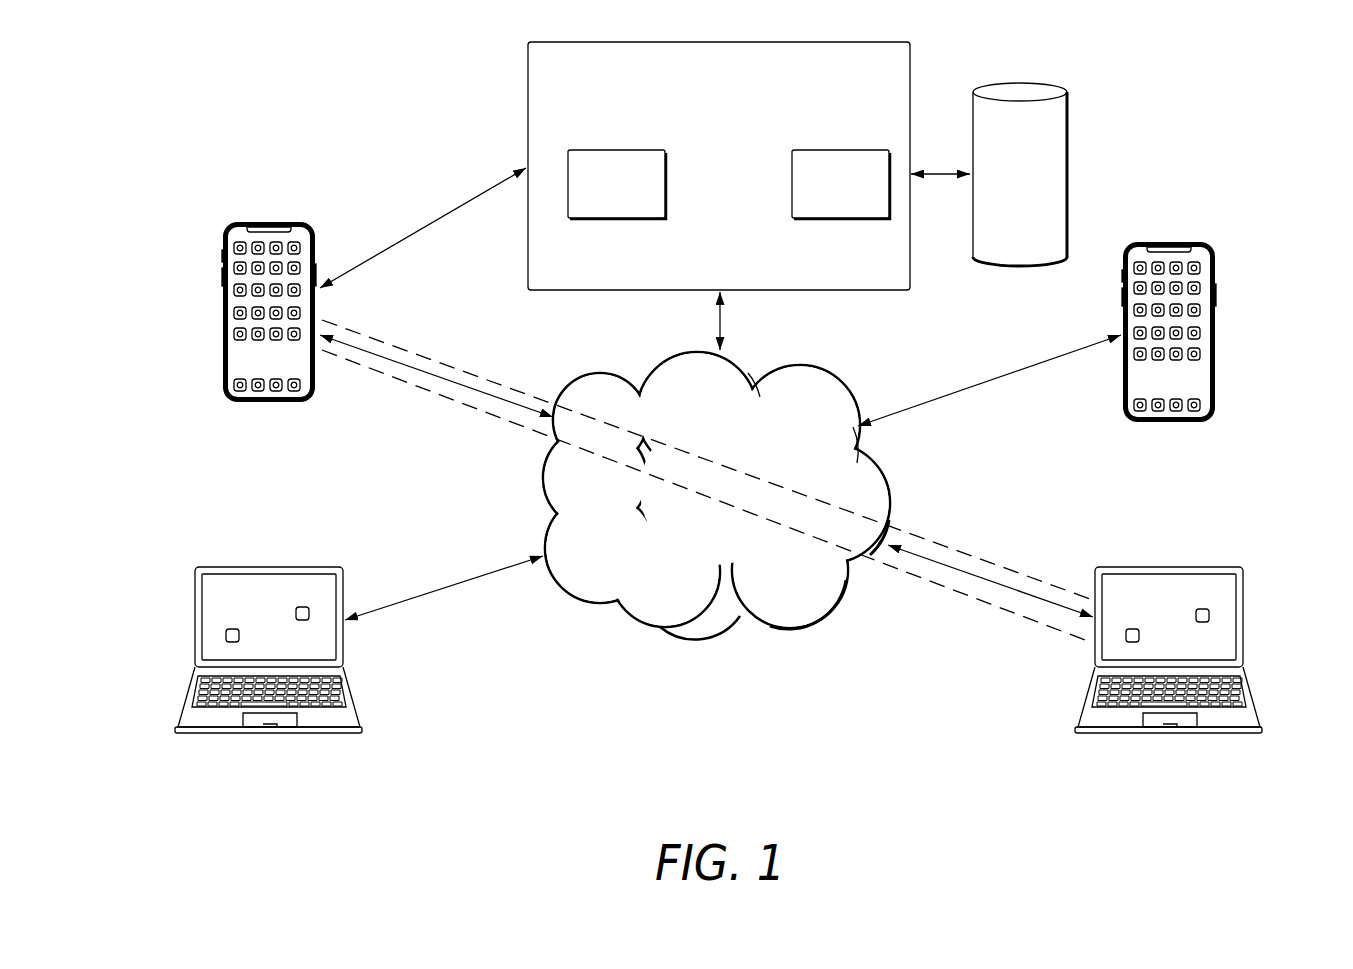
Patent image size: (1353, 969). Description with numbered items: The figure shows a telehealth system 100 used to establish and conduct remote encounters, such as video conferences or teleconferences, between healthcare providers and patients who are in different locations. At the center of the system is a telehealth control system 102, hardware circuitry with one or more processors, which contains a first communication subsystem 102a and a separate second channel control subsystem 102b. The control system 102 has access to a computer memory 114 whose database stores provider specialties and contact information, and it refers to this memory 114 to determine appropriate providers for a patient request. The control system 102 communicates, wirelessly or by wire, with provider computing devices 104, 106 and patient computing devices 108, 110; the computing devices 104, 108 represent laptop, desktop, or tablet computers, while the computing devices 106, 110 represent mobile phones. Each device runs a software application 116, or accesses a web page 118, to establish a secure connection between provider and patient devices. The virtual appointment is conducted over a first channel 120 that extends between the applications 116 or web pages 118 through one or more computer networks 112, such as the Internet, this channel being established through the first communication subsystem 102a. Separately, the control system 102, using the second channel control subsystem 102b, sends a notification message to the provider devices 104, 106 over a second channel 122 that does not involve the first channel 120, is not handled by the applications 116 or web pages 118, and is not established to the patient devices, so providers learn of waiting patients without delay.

The telehealth system 100 is at (349, 130).
The telehealth control system 102 is at (719, 152).
The first communication subsystem 102a is at (596, 195).
The second channel control subsystem 102b is at (820, 195).
The provider computing device 104 is at (240, 567).
The provider computing device 106 is at (258, 222).
The patient computing device 108 is at (1195, 567).
The patient computing device 110 is at (1183, 242).
The computer network 112 is at (799, 366).
The computer memory 114 is at (1034, 85).
The software application 116 is at (302, 341).
The web page 118 is at (259, 393).
The first channel 120 is at (955, 586).
The second channel 122 is at (433, 222).